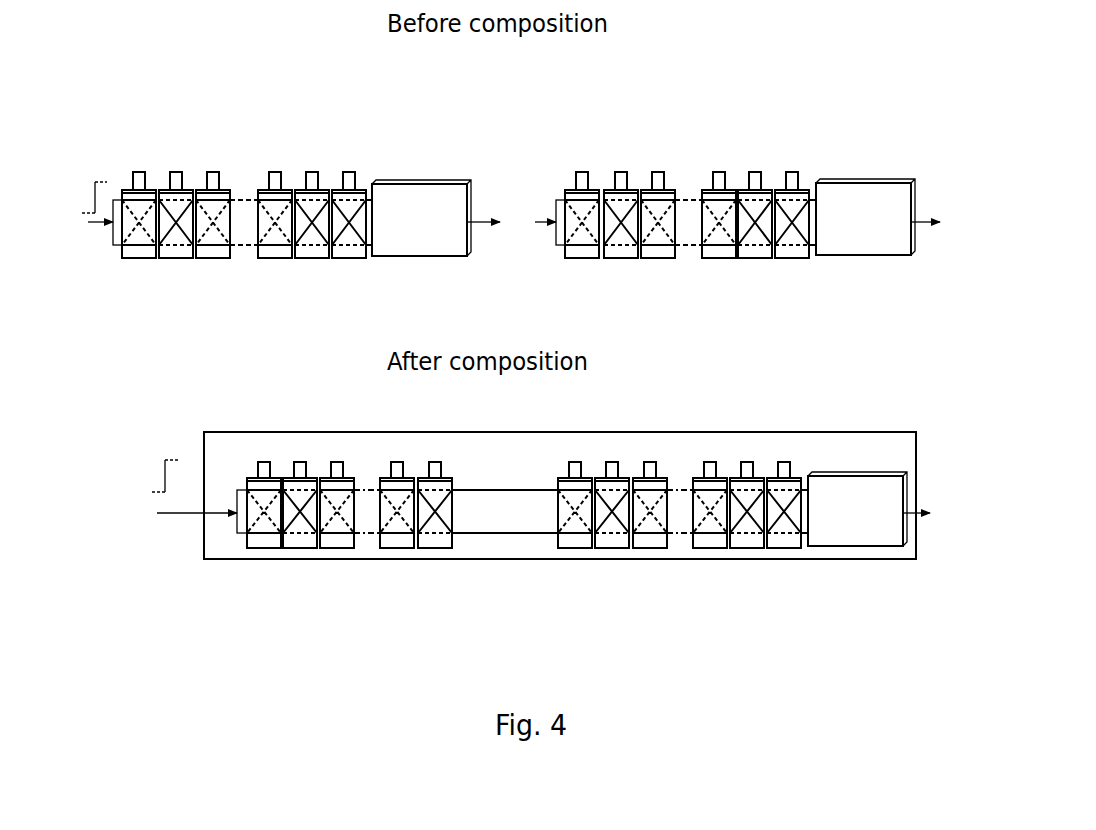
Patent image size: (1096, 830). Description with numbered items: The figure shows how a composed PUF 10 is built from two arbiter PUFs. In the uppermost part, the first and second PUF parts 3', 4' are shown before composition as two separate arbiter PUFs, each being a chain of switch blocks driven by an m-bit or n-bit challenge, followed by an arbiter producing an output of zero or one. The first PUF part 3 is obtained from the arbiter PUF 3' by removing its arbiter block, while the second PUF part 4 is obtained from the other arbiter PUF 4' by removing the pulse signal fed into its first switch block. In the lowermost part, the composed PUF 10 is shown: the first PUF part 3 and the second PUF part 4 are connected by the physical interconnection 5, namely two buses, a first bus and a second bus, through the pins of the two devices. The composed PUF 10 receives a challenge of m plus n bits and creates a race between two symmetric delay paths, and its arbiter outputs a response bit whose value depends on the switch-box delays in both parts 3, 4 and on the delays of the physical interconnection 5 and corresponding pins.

The arbiter PUF 3' is at (294, 180).
The arbiter PUF 4' is at (743, 161).
The first PUF part 3 is at (349, 430).
The second PUF part 4 is at (683, 431).
The composed PUF 10 is at (224, 432).
The physical interconnection 5 is at (503, 548).